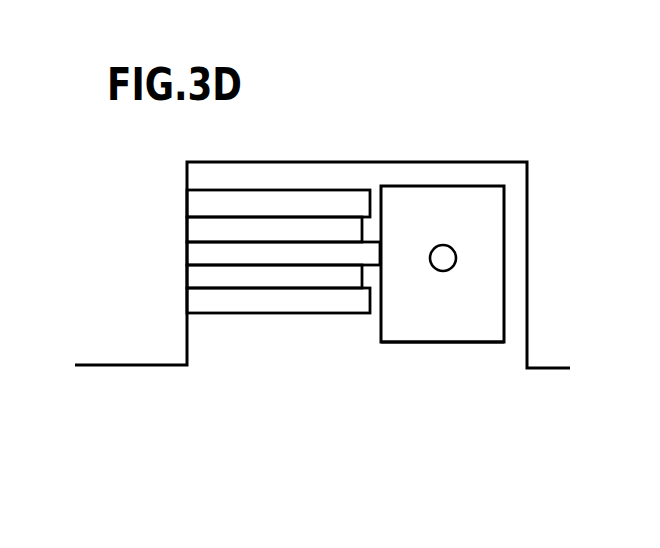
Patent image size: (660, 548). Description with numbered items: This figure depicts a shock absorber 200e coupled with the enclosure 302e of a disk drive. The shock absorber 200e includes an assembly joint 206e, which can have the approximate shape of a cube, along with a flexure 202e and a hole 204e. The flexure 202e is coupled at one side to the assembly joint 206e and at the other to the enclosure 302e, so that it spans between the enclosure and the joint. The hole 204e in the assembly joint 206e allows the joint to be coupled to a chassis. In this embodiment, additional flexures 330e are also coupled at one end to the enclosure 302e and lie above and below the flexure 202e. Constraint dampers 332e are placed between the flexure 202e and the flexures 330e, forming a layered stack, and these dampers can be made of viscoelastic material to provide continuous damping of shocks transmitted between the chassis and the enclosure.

The enclosure 302e is at (148, 238).
The flexures 330e is at (208, 202).
The constraint dampers 332e is at (285, 225).
The flexure 202e is at (340, 253).
The shock absorber 200e is at (483, 226).
The hole 204e is at (444, 260).
The assembly joint 206e is at (415, 320).